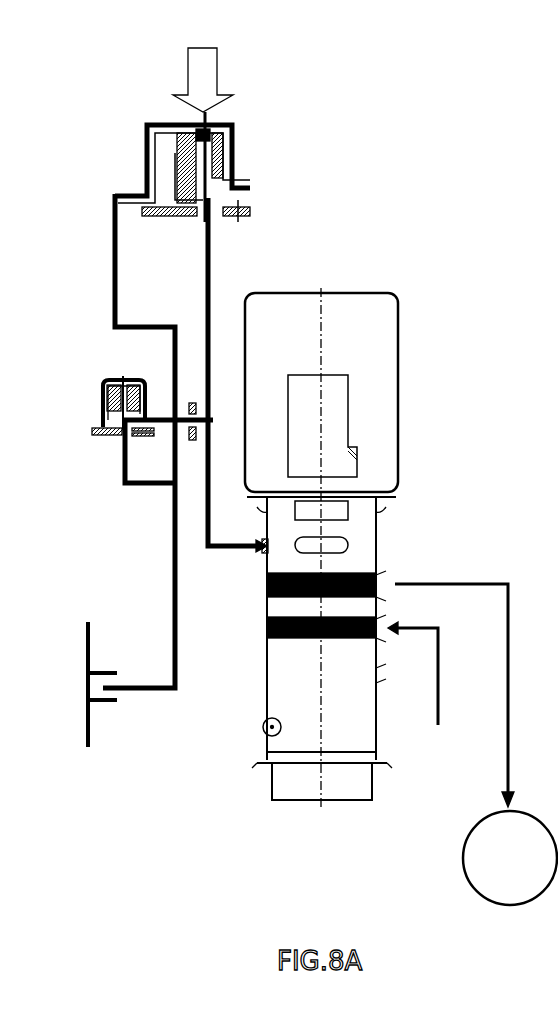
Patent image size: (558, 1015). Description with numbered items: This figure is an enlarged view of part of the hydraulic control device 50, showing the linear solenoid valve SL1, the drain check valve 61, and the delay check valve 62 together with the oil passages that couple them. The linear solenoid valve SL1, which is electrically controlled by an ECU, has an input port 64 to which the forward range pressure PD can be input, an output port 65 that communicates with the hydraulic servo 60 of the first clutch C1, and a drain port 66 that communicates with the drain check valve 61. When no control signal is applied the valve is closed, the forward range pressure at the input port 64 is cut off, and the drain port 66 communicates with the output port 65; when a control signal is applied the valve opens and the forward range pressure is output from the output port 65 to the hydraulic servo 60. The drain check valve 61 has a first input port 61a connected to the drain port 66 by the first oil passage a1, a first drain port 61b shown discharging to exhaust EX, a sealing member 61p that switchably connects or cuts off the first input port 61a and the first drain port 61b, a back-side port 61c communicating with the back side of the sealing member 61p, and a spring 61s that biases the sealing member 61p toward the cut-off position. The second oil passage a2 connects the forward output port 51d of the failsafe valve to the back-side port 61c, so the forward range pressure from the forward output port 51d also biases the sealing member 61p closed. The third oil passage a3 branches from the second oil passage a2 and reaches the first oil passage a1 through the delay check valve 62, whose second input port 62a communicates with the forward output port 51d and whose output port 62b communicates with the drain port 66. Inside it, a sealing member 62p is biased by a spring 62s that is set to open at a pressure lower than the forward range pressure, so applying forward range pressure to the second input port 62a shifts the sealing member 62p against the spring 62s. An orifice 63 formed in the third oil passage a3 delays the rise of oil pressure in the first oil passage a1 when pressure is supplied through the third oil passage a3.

The hydraulic control device 50 is at (323, 76).
The forward output port 51d is at (103, 680).
The hydraulic servo 60 is at (529, 792).
The drain check valve 61 is at (150, 111).
The first input port 61a is at (196, 214).
The first drain port 61b is at (238, 221).
The back-side port 61c is at (146, 190).
The sealing member 61p is at (234, 135).
The spring 61s is at (236, 162).
The delay check valve 62 is at (95, 371).
The second input port 62a is at (113, 440).
The output port 62b is at (150, 416).
The sealing member 62p is at (102, 390).
The spring 62s is at (104, 404).
The orifice 63 is at (168, 440).
The input port 64 is at (389, 633).
The output port 65 is at (384, 582).
The drain port 66 is at (260, 553).
The first oil passage a1 is at (213, 271).
The second oil passage a2 is at (111, 268).
The third oil passage a3 is at (123, 474).
The linear solenoid valve SL1 is at (339, 276).
The first clutch C1 is at (510, 858).
The exhaust port EX is at (253, 207).